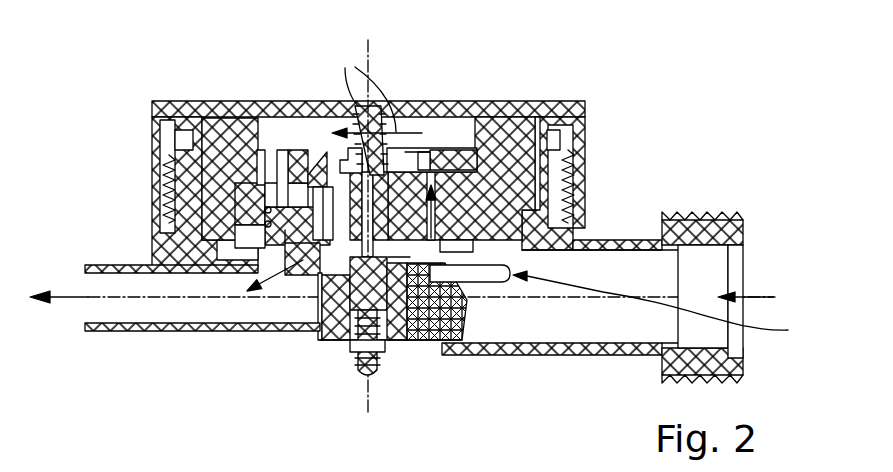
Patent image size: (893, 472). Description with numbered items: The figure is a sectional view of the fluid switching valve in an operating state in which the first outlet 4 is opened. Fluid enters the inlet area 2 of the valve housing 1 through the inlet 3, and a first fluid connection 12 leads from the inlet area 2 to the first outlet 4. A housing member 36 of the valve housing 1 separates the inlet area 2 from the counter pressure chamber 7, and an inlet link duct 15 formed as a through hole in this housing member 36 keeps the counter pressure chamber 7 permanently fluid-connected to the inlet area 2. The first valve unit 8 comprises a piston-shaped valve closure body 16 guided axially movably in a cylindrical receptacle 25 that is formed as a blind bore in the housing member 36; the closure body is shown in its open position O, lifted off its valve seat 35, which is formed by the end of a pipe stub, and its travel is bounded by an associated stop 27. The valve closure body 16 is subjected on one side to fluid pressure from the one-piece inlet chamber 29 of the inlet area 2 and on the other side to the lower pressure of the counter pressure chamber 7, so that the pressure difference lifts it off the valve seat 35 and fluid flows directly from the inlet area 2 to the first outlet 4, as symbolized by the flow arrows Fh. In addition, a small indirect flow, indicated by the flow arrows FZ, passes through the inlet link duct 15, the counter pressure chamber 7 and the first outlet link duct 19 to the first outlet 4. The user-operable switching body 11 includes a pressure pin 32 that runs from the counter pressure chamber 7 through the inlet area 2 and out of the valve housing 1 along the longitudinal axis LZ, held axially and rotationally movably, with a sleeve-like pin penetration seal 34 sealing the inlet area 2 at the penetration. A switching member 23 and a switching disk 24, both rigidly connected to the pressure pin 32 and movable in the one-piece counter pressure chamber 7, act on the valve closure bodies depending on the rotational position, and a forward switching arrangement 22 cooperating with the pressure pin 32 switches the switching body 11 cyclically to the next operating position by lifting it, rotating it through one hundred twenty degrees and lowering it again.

The valve housing 1 is at (572, 100).
The inlet area 2 is at (618, 262).
The inlet 3 is at (745, 262).
The first outlet 4 is at (95, 310).
The counter pressure chamber 7 is at (439, 127).
The first valve unit 8 is at (306, 133).
The switching body 11 is at (325, 230).
The first fluid connection 12 is at (255, 242).
The inlet link duct 15 is at (350, 277).
The valve closure body 16 is at (260, 150).
The first outlet link duct 19 is at (285, 183).
The forward switching arrangement 22 is at (380, 340).
The switching member 23 is at (475, 106).
The switching disk 24 is at (470, 142).
The receptacle 25 is at (238, 190).
The stop 27 is at (250, 172).
The inlet chamber 29 is at (502, 252).
The pressure pin 32 is at (408, 280).
The pin penetration seal 34 is at (343, 267).
The valve seat 35 is at (262, 222).
The housing member 36 is at (210, 137).
The open position O is at (262, 210).
The flow arrows Fz FZ is at (375, 85).
The longitudinal axis Lz LZ is at (372, 57).
The flow arrows Fh is at (762, 302).